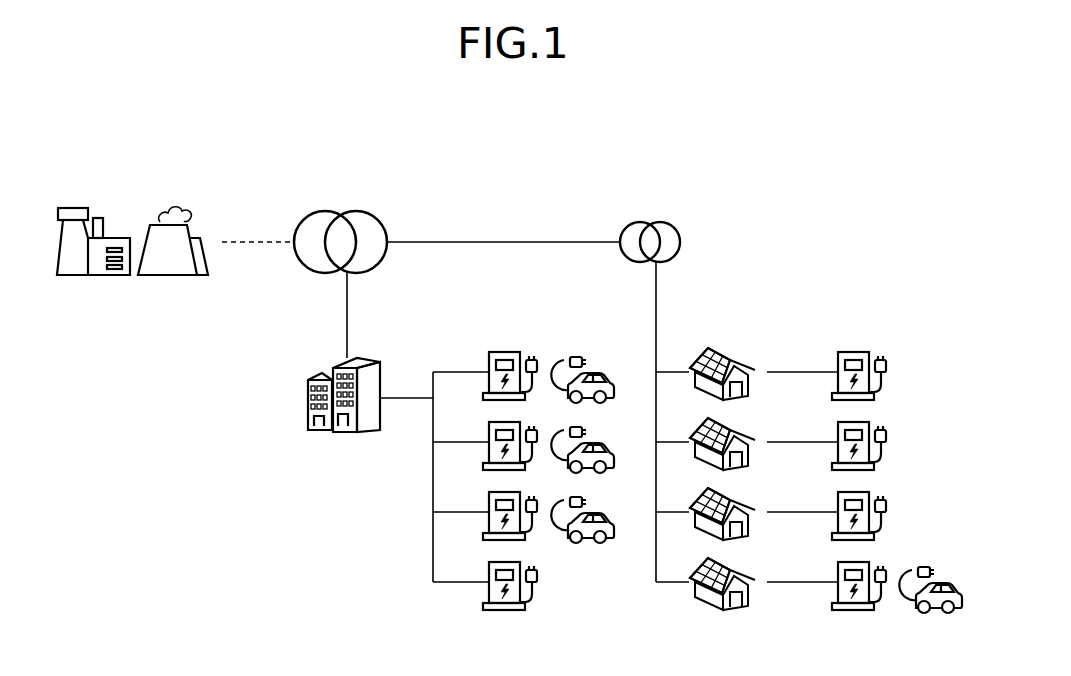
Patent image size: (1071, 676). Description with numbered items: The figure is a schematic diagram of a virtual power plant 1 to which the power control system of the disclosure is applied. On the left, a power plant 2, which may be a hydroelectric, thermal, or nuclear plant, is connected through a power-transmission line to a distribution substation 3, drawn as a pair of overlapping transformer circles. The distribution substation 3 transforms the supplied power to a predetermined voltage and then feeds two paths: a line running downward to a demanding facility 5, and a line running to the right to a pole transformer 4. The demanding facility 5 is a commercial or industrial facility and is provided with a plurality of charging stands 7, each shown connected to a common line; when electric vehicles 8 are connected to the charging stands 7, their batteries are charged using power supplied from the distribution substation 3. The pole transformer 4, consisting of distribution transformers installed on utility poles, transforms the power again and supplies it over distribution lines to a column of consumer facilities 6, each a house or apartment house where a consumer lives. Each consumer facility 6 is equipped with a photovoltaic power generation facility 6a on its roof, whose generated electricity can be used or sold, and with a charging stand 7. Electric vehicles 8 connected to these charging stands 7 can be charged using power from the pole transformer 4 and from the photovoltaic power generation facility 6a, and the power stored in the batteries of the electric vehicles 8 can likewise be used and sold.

The virtual power plant 1 is at (534, 122).
The power plant 2 is at (129, 198).
The distribution substation 3 is at (377, 212).
The pole transformer 4 is at (678, 224).
The demanding facility 5 is at (308, 403).
The consumer facility 6 is at (738, 355).
The photovoltaic power generation facility 6a is at (702, 352).
The charging stand 7 is at (489, 388).
The electric vehicle 8 is at (604, 379).